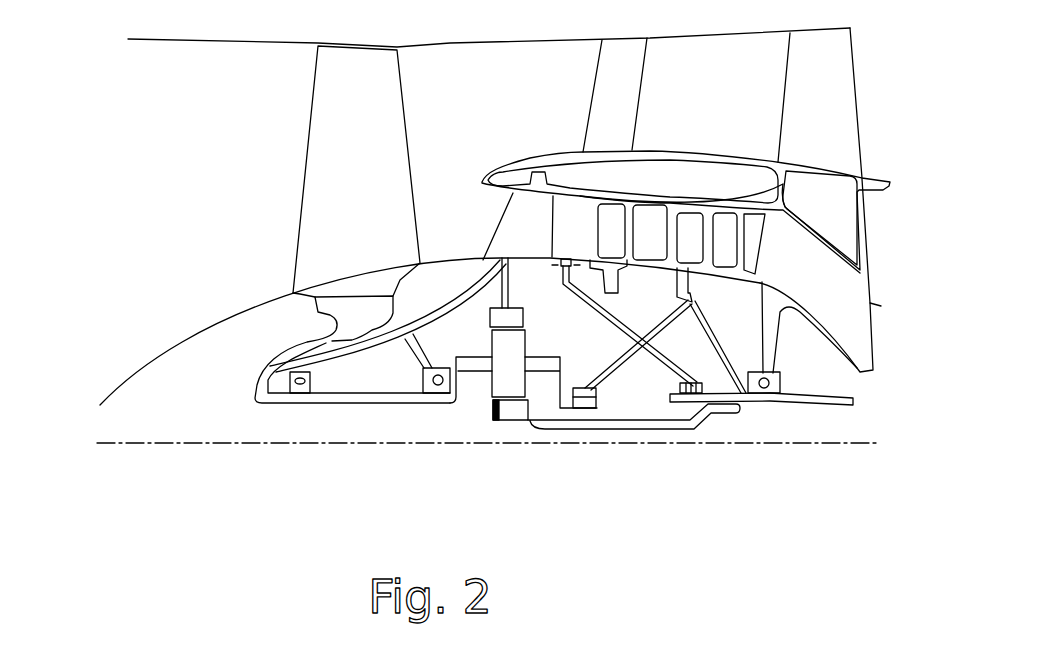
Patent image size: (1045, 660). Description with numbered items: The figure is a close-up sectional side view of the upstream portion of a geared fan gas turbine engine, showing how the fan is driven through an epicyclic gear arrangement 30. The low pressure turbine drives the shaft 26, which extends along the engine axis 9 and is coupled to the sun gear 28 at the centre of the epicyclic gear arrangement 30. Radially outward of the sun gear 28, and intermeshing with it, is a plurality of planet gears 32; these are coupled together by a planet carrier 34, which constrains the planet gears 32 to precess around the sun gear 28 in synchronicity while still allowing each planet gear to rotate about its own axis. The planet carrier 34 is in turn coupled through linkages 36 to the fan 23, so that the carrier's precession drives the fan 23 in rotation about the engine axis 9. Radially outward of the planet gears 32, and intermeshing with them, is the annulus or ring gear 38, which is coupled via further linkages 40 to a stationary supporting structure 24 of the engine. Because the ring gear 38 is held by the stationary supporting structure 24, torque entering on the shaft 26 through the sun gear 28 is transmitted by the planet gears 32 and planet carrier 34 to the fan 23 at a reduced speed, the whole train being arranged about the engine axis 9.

The engine axis 9 is at (283, 444).
The fan 23 is at (322, 172).
The stationary supporting structure 24 is at (517, 220).
The shaft 26 is at (655, 430).
The sun gear 28 is at (510, 412).
The epicyclic gear arrangement 30 is at (458, 420).
The planet gears 32 is at (496, 383).
The planet carrier 34 is at (549, 398).
The linkages 36 is at (462, 387).
The ring gear 38 is at (490, 317).
The linkages 40 is at (510, 295).